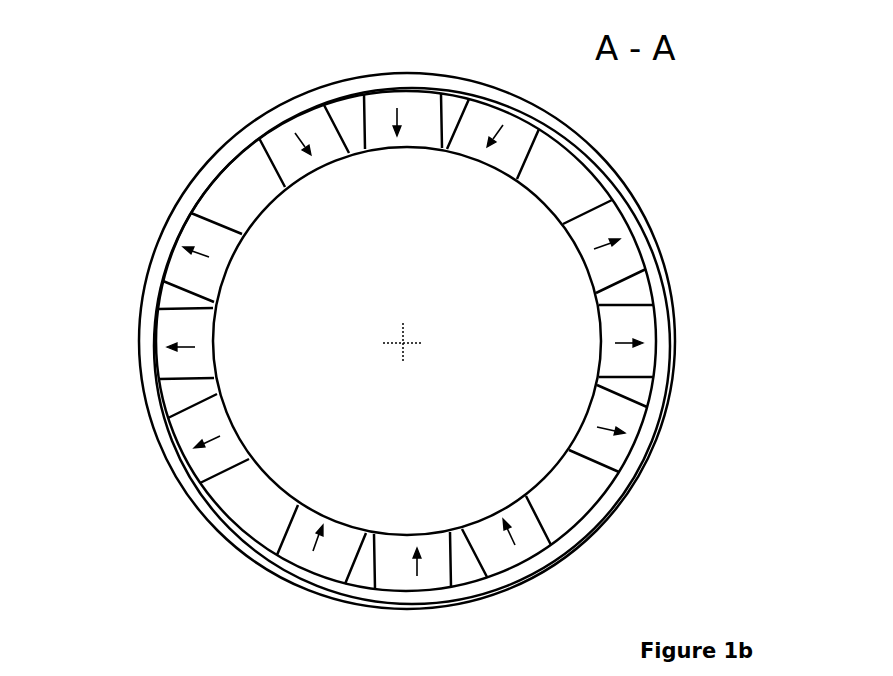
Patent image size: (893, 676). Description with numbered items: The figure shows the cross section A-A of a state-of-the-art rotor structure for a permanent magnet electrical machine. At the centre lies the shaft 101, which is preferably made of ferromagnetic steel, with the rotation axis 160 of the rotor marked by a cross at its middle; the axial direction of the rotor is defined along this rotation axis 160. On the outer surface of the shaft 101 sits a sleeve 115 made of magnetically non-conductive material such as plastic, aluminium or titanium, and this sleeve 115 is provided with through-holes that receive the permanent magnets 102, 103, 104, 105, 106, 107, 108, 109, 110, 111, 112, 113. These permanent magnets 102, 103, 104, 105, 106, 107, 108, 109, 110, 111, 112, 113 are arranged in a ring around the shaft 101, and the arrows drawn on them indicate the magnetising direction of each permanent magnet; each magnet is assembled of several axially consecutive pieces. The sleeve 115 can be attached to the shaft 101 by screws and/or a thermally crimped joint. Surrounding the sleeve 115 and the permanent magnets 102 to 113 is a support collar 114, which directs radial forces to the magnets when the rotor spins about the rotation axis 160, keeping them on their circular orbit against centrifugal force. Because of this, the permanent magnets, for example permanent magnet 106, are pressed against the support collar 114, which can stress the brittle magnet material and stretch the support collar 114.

The shaft 101 is at (422, 262).
The permanent magnet 102 is at (590, 442).
The permanent magnet 103 is at (617, 362).
The permanent magnet 104 is at (587, 237).
The permanent magnet 105 is at (470, 152).
The permanent magnet 106 is at (414, 150).
The permanent magnet 107 is at (334, 152).
The permanent magnet 108 is at (223, 238).
The permanent magnet 109 is at (196, 323).
The permanent magnet 110 is at (218, 412).
The permanent magnet 111 is at (308, 522).
The permanent magnet 112 is at (398, 543).
The permanent magnet 113 is at (478, 532).
The support collar 114 is at (303, 92).
The sleeve 115 is at (345, 103).
The rotation axis 160 is at (410, 338).